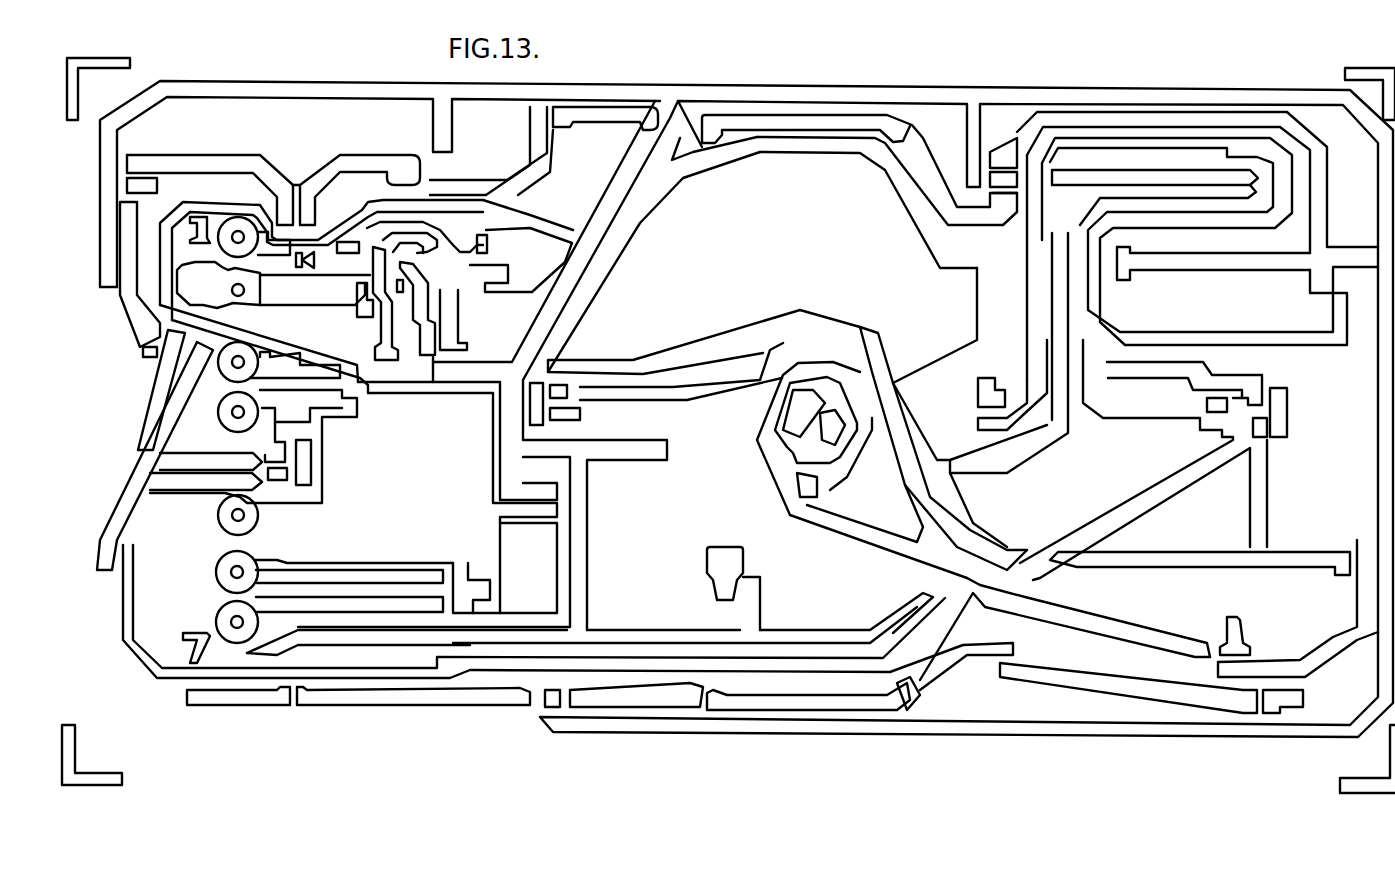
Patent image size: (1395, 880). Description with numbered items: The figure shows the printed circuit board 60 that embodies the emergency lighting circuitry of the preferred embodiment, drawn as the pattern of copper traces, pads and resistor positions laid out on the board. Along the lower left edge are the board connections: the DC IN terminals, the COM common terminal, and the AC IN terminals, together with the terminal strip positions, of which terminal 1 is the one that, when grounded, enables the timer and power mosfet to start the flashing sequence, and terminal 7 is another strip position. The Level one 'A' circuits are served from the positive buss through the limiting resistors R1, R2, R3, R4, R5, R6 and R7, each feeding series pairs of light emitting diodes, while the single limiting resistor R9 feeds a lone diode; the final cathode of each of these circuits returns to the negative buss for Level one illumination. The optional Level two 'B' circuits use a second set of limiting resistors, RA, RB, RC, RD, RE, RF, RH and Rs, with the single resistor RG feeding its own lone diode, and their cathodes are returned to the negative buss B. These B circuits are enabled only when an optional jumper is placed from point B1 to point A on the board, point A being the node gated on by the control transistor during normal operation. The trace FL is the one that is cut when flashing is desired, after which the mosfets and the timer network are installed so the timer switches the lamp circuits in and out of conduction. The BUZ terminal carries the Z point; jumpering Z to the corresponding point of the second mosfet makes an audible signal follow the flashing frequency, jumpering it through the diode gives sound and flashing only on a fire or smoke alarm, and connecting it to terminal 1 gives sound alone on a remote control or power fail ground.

The printed circuit board 60 is at (70, 106).
The limiting resistor Rs is at (395, 178).
The limiting resistor R7 is at (785, 157).
The FL trace FL is at (501, 199).
The limiting resistor R6 is at (887, 202).
The limiting resistor RD is at (1197, 246).
The limiting resistor R5 is at (1213, 279).
The limiting resistor R4 is at (1003, 350).
The limiting resistor RC is at (970, 443).
The limiting resistor RE is at (1153, 460).
The limiting resistor RF is at (964, 401).
The limiting resistor R3 is at (728, 623).
The BUZ terminal BUZ is at (700, 588).
The Z point Z is at (598, 443).
The limiting resistor R2 is at (624, 613).
The limiting resistor RA is at (460, 506).
The limiting resistor RB is at (681, 395).
The point A is at (503, 324).
The negative buss B is at (410, 302).
The limiting resistor R9 is at (122, 279).
The limiting resistor Rg RG is at (149, 390).
The limiting resistor RH is at (154, 456).
The DC input terminals DC IN is at (217, 387).
The common terminal COM is at (190, 531).
The AC input terminals AC IN is at (222, 578).
The terminal strip terminal 1 is at (323, 296).
The terminal 7 is at (196, 648).
The limiting resistor R1 is at (529, 695).
The point B1 is at (425, 658).